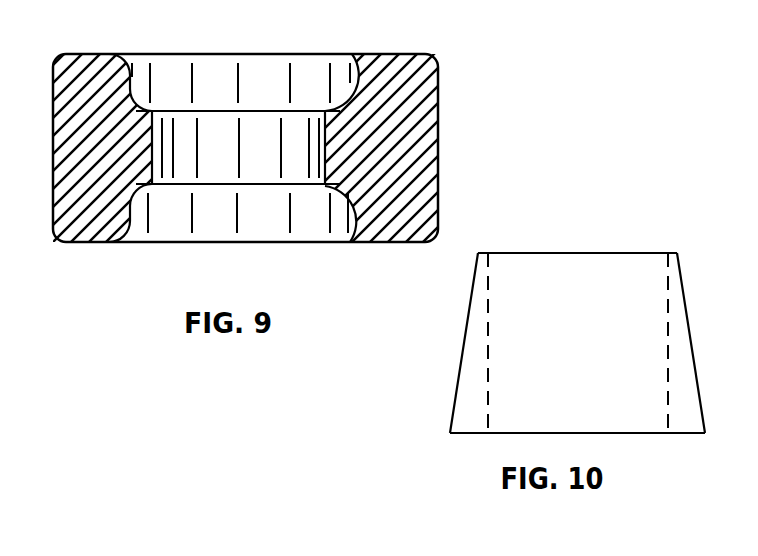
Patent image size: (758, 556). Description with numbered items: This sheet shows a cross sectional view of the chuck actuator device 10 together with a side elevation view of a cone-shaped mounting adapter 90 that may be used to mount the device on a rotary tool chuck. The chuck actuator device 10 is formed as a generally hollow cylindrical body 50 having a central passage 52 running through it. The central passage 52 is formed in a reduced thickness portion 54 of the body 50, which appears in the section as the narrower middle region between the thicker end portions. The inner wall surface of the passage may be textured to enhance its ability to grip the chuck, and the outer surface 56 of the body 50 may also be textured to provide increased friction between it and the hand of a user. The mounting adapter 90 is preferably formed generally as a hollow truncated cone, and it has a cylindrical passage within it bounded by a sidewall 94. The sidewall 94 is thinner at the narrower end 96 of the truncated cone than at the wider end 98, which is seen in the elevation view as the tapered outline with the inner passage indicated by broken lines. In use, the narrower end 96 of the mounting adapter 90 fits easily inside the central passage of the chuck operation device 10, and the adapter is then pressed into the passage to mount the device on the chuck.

In FIG. 9, the chuck actuator device 10 is at (108, 290).
In FIG. 9, the hollow cylindrical body 50 is at (437, 170).
In FIG. 9, the central passage 52 is at (318, 114).
In FIG. 9, the reduced thickness portion 54 is at (325, 186).
In FIG. 9, the outer surface 56 is at (482, 71).
In FIG. 10, the mounting adapter 90 is at (413, 414).
In FIG. 10, the sidewall 94 is at (465, 347).
In FIG. 10, the narrower end 96 is at (522, 232).
In FIG. 10, the wider end 98 is at (464, 461).